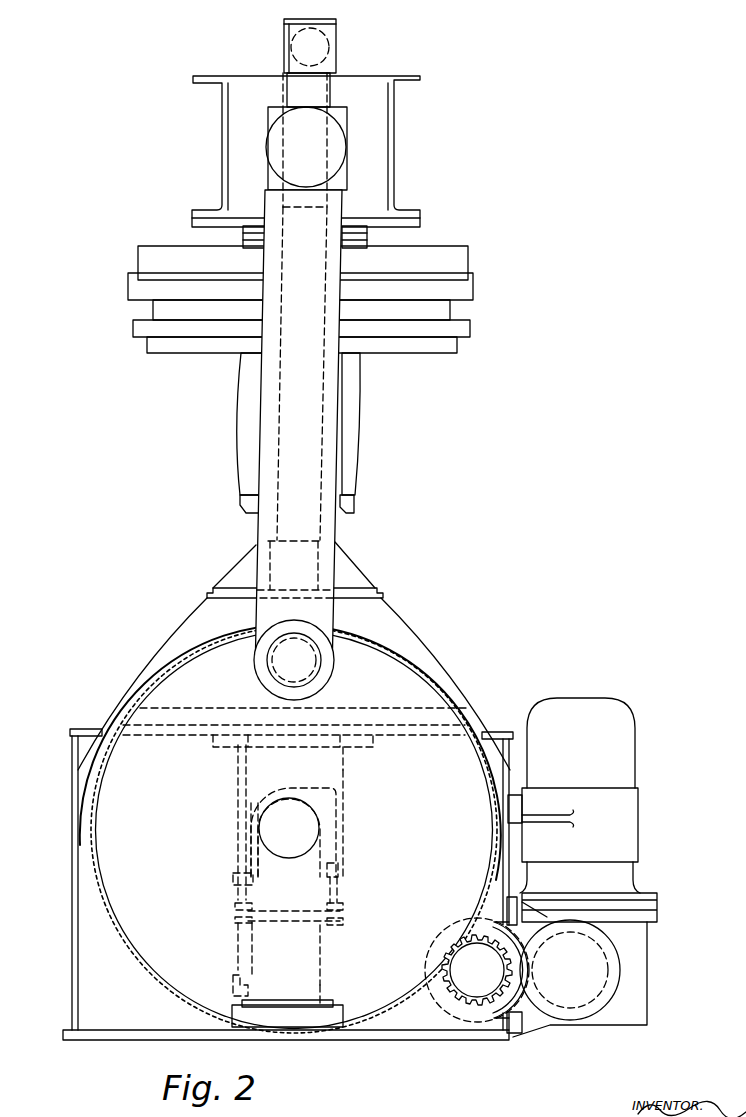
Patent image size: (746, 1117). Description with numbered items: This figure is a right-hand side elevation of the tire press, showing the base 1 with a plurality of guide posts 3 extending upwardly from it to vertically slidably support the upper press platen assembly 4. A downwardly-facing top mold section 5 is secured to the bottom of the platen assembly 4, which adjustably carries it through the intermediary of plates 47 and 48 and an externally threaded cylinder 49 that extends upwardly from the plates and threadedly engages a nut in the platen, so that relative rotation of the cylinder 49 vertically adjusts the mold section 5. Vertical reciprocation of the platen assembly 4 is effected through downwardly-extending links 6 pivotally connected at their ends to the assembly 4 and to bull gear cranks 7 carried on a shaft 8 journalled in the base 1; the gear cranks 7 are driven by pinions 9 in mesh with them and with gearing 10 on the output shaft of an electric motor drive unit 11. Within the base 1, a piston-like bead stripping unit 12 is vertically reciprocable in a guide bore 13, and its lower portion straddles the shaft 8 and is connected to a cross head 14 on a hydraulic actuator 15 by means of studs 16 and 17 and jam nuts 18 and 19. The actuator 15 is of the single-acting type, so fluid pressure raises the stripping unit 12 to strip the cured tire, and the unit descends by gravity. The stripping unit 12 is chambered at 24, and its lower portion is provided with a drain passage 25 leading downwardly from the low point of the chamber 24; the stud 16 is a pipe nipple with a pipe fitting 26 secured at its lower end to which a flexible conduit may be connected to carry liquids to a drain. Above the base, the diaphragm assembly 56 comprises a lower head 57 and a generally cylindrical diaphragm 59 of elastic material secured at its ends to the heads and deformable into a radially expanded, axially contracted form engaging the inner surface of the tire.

The base 1 is at (72, 905).
The guide posts 3 is at (320, 526).
The upper press platen assembly 4 is at (448, 246).
The top mold section 5 is at (470, 333).
The links 6 is at (327, 433).
The bull gear cranks 7 is at (294, 830).
The shaft 8 is at (305, 825).
The pinions 9 is at (463, 1000).
The gearing 10 is at (532, 970).
The electric motor drive unit 11 is at (622, 835).
The bead stripping unit 12 is at (340, 765).
The guide bore 13 is at (345, 837).
The cross head 14 is at (313, 917).
The hydraulic actuator 15 is at (325, 963).
The stud 16 is at (233, 892).
The stud 17 is at (338, 888).
The jam nut 18 is at (230, 907).
The jam nut 19 is at (342, 905).
The chamber 24 is at (235, 773).
The drain passage 25 is at (235, 847).
The pipe fitting 26 is at (230, 987).
The plate 47 is at (463, 297).
The plate 48 is at (455, 267).
The externally threaded cylinder 49 is at (367, 240).
The diaphragm assembly 56 is at (362, 445).
The lower head 57 is at (355, 503).
The diaphragm 59 is at (242, 430).